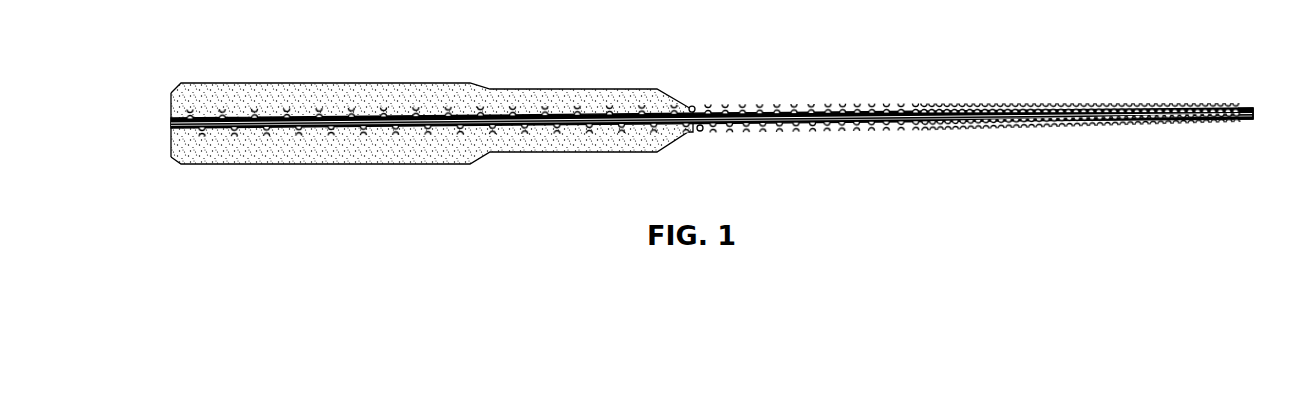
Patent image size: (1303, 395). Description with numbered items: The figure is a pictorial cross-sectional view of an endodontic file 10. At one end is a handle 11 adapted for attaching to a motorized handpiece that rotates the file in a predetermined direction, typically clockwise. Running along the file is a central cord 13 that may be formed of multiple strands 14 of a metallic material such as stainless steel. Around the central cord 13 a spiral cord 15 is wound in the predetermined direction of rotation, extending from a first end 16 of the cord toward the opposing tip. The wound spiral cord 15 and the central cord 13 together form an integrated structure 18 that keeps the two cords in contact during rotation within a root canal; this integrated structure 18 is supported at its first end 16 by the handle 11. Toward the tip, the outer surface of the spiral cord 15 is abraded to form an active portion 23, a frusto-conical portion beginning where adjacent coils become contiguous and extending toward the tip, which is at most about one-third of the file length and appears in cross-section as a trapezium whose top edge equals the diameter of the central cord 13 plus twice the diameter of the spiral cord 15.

The endodontic file 10 is at (783, 226).
The handle 11 is at (335, 82).
The central cord 13 is at (1247, 132).
The strands 14 is at (1253, 111).
The spiral cord 15 is at (762, 106).
The first end 16 is at (162, 121).
The integrated structure 18 is at (983, 146).
The active portion 23 is at (1254, 93).